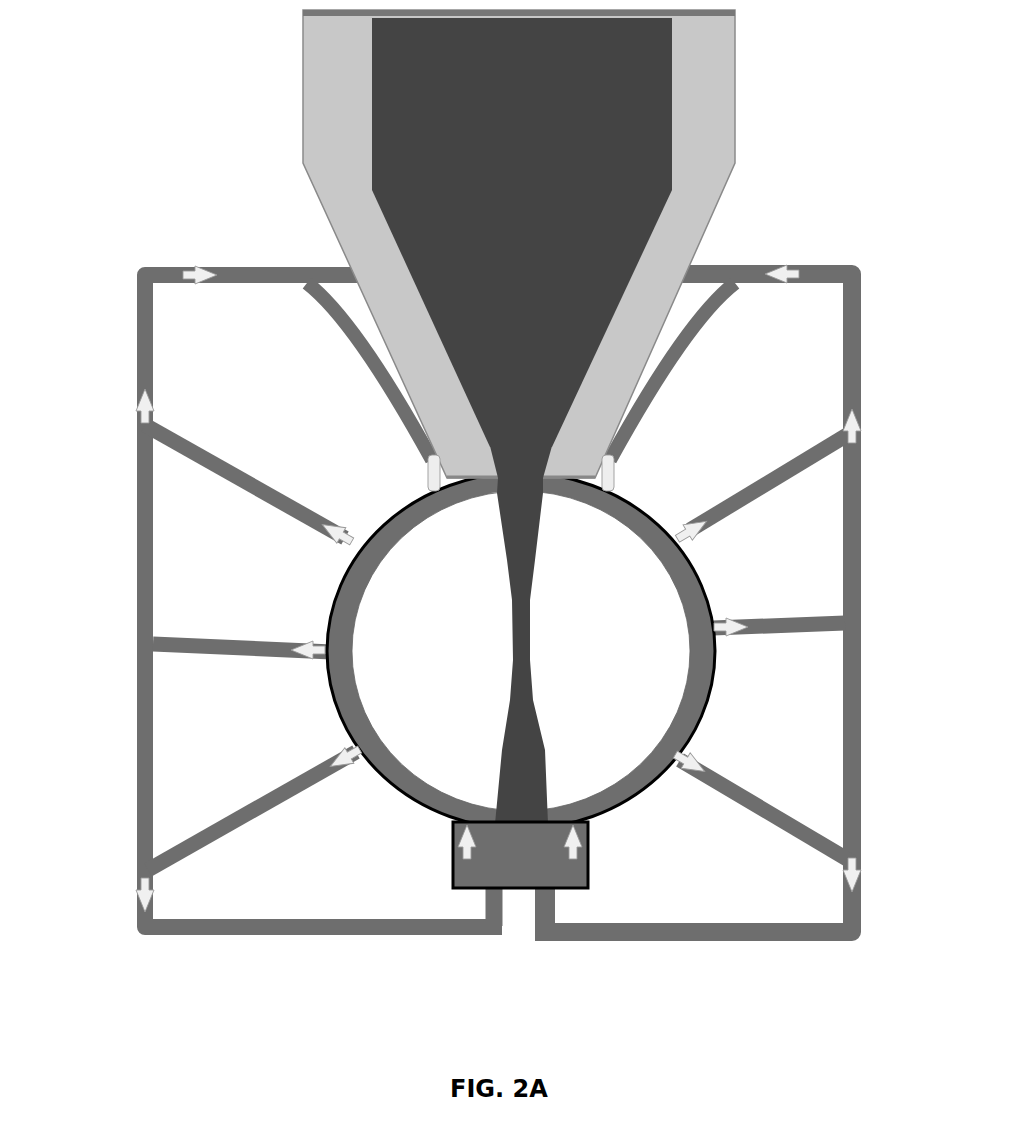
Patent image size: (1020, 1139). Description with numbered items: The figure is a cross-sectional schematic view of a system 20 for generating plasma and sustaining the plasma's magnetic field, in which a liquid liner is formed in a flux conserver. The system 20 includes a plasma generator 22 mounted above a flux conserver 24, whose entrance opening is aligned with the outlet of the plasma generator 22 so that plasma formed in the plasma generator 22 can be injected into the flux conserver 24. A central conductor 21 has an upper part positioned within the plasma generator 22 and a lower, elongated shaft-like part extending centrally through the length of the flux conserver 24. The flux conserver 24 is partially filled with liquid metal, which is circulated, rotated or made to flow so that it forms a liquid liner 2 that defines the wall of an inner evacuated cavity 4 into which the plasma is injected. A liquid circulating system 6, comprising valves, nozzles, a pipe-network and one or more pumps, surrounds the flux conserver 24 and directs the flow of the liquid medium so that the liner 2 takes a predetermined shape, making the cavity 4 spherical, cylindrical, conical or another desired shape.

The liquid liner 2 is at (565, 651).
The inner evacuated cavity 4 is at (613, 652).
The liquid circulating system 6 is at (140, 632).
The system 20 is at (473, 471).
The central conductor 21 is at (530, 537).
The plasma generator 22 is at (292, 109).
The flux conserver 24 is at (721, 562).